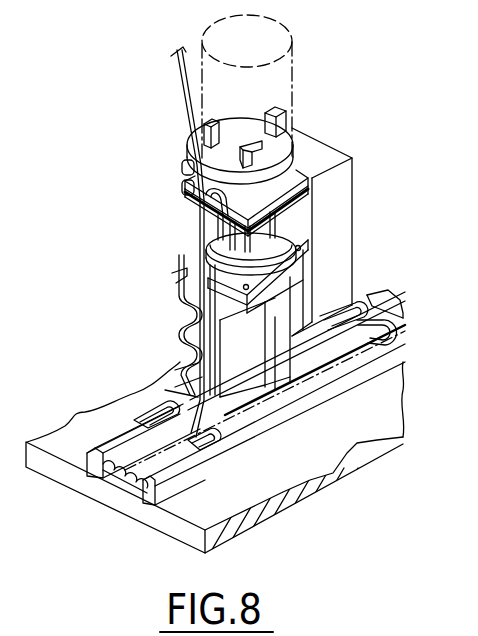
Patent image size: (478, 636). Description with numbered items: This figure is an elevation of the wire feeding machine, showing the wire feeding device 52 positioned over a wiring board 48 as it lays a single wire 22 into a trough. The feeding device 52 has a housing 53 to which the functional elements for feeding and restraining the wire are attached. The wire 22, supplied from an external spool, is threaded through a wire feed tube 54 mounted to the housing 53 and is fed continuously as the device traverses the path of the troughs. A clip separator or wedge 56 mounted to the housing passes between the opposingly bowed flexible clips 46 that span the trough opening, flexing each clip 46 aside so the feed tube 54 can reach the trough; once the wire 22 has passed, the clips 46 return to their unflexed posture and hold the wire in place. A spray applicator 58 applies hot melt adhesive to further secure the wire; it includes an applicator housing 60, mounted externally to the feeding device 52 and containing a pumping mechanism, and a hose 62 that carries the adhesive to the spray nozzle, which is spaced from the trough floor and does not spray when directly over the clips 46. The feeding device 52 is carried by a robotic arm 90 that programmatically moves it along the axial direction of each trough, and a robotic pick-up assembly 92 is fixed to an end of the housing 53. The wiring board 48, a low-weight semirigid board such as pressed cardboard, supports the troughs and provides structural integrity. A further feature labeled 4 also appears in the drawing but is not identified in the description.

The connector 4 is at (140, 447).
The wire 22 is at (187, 101).
The flexible clip 46 is at (157, 415).
The wiring board 48 is at (195, 512).
The wire feeding device 52 is at (333, 141).
The housing 53 is at (178, 188).
The wire feed tube 54 is at (178, 318).
The clip separator or wedge 56 is at (214, 479).
The spray applicator 58 is at (364, 204).
The applicator housing 60 is at (12, 268).
The hose 62 is at (20, 101).
The robotic arm 90 is at (292, 62).
The robotic pick-up assembly 92 is at (279, 103).